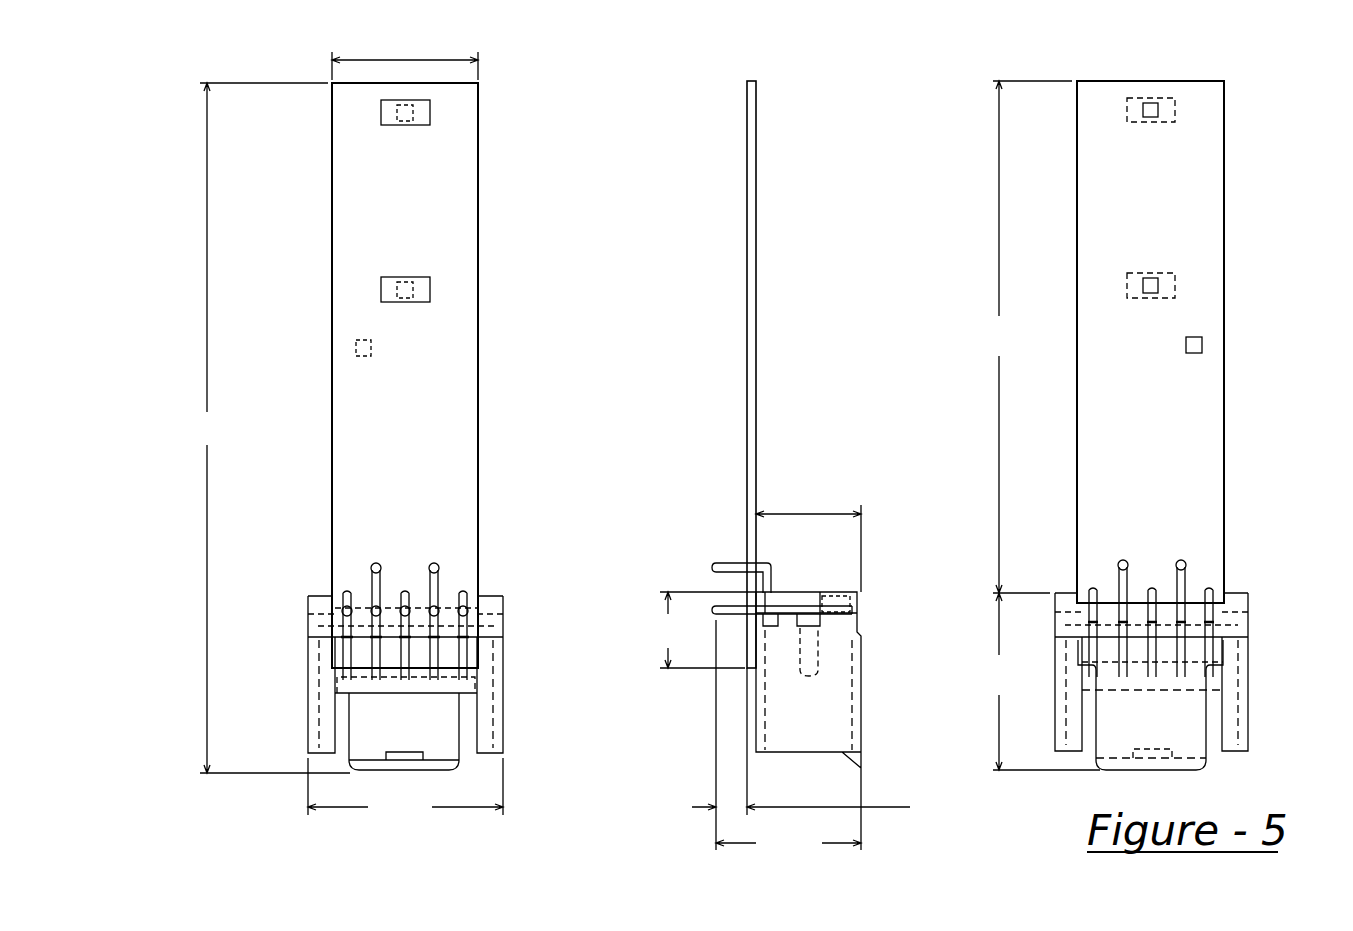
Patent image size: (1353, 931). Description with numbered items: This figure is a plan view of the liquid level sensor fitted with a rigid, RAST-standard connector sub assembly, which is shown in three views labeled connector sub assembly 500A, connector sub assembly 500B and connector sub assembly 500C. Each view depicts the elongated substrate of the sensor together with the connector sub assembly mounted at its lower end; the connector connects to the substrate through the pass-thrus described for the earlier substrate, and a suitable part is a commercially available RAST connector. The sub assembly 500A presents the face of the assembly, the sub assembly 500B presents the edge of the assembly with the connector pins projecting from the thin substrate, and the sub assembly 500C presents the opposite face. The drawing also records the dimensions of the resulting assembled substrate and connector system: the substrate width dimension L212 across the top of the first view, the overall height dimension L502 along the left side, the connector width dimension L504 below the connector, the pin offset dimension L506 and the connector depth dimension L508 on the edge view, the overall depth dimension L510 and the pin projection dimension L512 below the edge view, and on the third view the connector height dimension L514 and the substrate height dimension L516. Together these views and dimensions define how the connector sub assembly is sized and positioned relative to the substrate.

The connector sub assembly 500A is at (503, 636).
The connector sub assembly 500B is at (862, 679).
The connector sub assembly 500C is at (1248, 720).
The dimension L212 is at (478, 60).
The dimension L502 is at (267, 428).
The dimension L504 is at (405, 788).
The dimension L506 is at (702, 630).
The dimension L508 is at (861, 514).
The dimension L510 is at (788, 737).
The dimension L512 is at (828, 743).
The dimension L514 is at (1038, 681).
The dimension L516 is at (1021, 337).